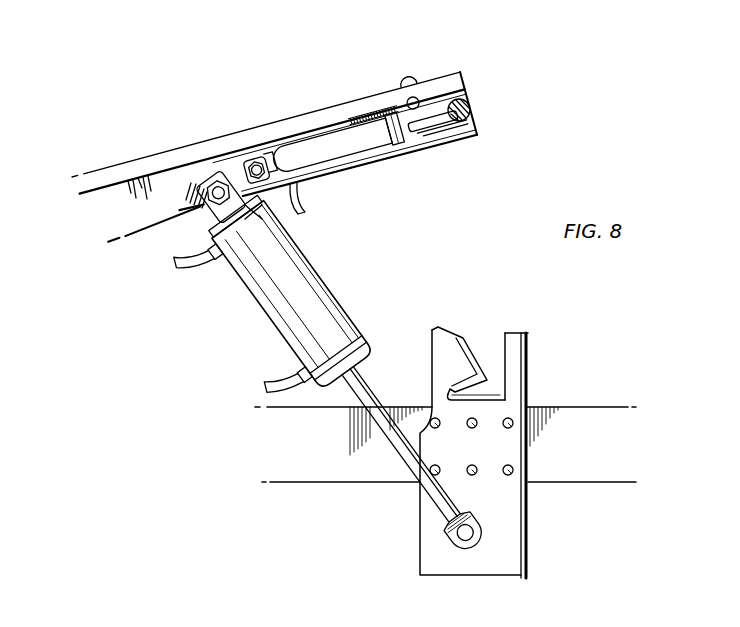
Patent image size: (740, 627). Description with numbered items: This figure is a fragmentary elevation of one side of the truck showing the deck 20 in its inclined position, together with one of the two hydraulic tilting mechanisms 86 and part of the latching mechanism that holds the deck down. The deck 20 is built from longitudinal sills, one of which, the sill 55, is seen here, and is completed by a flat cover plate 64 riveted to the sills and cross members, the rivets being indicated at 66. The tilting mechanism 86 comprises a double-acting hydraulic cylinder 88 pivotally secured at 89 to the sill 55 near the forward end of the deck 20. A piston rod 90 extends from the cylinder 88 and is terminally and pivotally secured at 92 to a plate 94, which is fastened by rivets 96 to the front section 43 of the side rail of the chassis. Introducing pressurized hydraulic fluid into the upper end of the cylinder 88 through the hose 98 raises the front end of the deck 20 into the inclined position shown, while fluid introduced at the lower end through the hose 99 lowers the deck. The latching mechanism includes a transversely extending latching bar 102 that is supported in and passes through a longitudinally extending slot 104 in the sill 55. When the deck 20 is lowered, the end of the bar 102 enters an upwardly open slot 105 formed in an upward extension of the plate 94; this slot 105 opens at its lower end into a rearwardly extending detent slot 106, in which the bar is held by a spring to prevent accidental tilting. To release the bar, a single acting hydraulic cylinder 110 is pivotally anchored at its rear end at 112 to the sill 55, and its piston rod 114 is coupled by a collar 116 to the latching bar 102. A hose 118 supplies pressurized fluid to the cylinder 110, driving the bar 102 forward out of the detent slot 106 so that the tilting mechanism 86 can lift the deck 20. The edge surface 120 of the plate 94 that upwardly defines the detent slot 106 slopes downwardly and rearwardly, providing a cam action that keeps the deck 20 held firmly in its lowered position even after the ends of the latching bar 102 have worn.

The deck 20 is at (433, 70).
The front section 43 is at (590, 426).
The sill 55 is at (118, 207).
The cover plate 64 is at (460, 71).
The rivets 66 is at (402, 79).
The tilting mechanism 86 is at (385, 293).
The double-acting hydraulic cylinder 88 is at (306, 301).
The pivotal securement 89 is at (210, 176).
The piston rod 90 is at (381, 400).
The pivotal securement 92 is at (462, 533).
The plate 94 is at (503, 555).
The rivets 96 is at (510, 478).
The hose 98 is at (205, 271).
The hose 99 is at (294, 386).
The latching bar 102 is at (478, 118).
The slot 104 is at (452, 144).
The slot 105 is at (493, 358).
The detent slot 106 is at (433, 377).
The single acting hydraulic cylinder 110 is at (353, 148).
The pivotal anchorage 112 is at (259, 162).
The piston rod 114 is at (428, 128).
The collar 116 is at (470, 102).
The hose 118 is at (312, 206).
The edge surface 120 is at (485, 395).